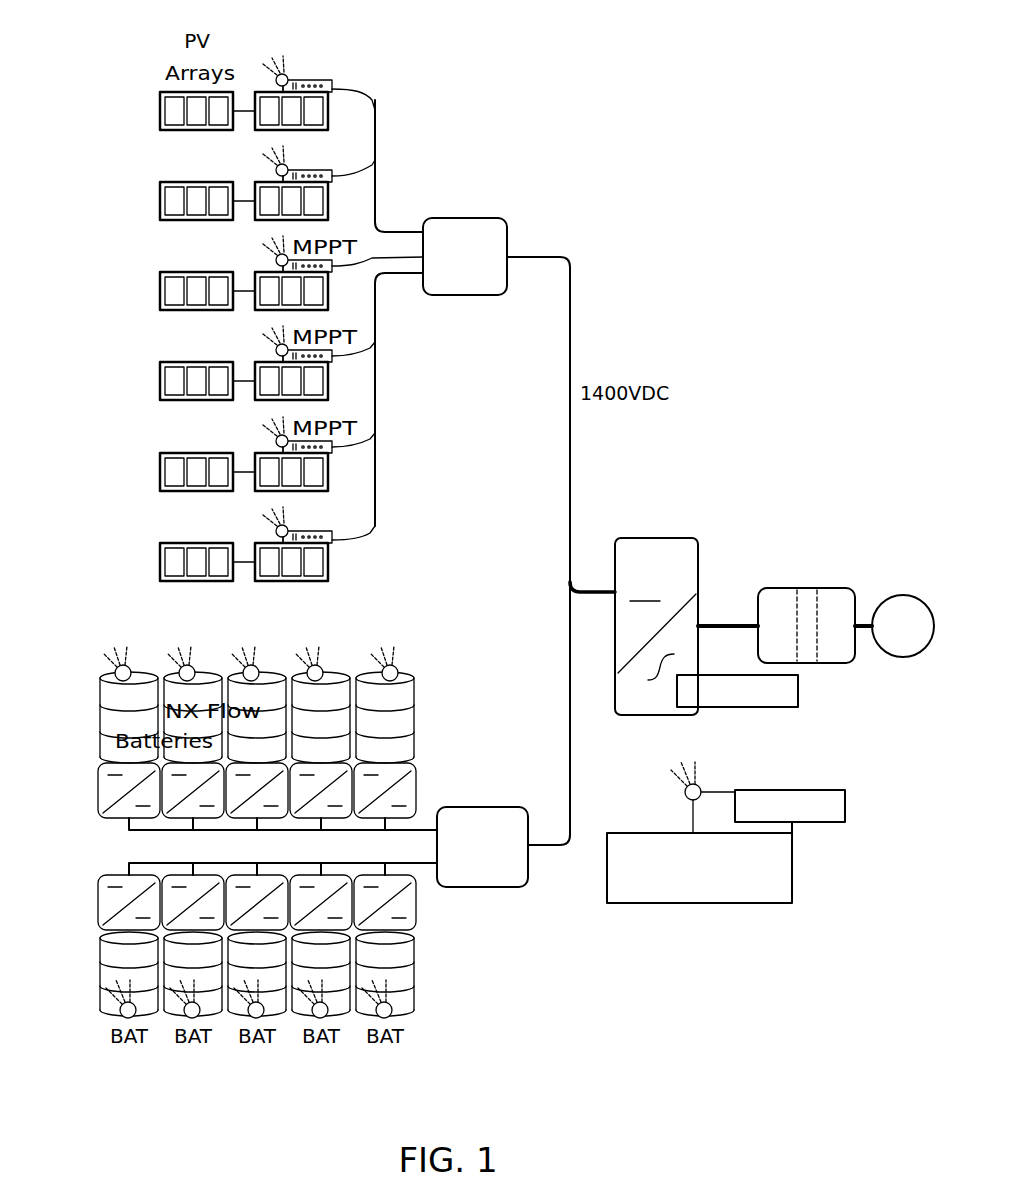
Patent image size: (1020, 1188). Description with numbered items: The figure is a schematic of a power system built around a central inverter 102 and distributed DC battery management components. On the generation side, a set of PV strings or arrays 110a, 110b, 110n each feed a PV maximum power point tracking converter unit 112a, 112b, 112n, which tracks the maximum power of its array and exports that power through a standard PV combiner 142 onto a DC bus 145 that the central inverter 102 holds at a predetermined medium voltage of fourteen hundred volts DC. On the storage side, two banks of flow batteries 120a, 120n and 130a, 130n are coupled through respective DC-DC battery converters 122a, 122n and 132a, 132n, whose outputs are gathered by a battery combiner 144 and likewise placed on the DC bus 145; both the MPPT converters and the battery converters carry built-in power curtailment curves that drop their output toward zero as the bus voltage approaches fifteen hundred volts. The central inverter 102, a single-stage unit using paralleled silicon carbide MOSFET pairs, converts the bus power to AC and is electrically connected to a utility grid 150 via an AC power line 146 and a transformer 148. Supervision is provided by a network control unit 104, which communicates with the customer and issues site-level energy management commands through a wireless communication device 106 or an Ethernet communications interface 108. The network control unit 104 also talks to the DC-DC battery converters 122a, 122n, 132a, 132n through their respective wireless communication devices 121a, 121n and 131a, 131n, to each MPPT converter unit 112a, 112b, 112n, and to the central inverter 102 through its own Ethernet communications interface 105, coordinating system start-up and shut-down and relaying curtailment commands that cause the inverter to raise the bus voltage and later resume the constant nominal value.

The central inverter 102 is at (650, 538).
The network control unit 104 is at (792, 860).
The Ethernet communications interface 105 is at (798, 691).
The wireless communication device 106 is at (702, 782).
The Ethernet communications interface 108 is at (845, 806).
The PV array 110a is at (148, 119).
The PV array 110b is at (148, 209).
The PV array 110n is at (148, 564).
The PV maximum power point tracking converter unit 112a is at (332, 84).
The PV maximum power point tracking converter unit 112b is at (375, 158).
The PV maximum power point tracking converter unit 112n is at (332, 535).
The flow battery 120a is at (100, 718).
The flow battery 120n is at (414, 718).
The wireless communication device 121a is at (115, 676).
The wireless communication device 121n is at (398, 673).
The DC-DC battery converter 122a is at (98, 792).
The DC-DC battery converter 122n is at (414, 772).
The flow battery 130a is at (100, 946).
The flow battery 130n is at (414, 990).
The wireless communication device 131a is at (120, 1010).
The wireless communication device 131n is at (394, 1012).
The DC-DC battery converter 132a is at (98, 900).
The DC-DC battery converter 132n is at (414, 950).
The PV combiner 142 is at (485, 218).
The battery combiner 144 is at (528, 870).
The DC bus 145 is at (600, 588).
The AC power line 146 is at (728, 624).
The transformer 148 is at (788, 586).
The grid 150 is at (902, 592).